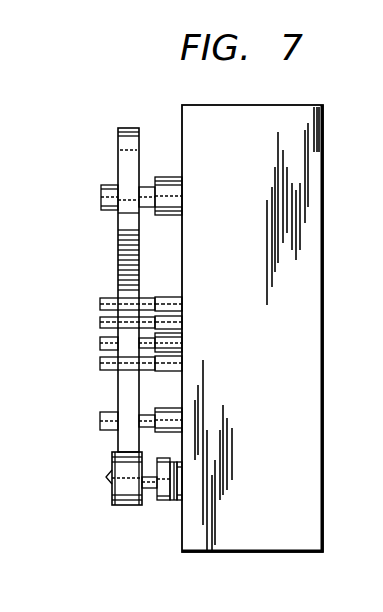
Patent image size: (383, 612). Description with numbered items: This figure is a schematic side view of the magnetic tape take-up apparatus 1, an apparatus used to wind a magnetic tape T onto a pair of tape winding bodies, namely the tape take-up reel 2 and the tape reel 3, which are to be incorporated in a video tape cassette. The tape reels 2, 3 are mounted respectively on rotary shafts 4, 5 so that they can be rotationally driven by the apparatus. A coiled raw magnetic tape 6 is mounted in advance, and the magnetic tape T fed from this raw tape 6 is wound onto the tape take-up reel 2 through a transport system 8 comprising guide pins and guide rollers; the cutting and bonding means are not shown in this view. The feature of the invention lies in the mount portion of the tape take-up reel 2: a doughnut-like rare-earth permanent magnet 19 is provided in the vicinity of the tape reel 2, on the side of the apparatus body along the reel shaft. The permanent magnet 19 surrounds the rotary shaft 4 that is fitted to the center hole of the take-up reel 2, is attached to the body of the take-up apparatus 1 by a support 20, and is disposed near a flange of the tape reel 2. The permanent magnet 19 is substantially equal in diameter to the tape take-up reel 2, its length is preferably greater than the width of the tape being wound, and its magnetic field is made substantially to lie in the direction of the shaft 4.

The take-up apparatus 1 is at (324, 178).
The tape take-up reel 2 is at (81, 484).
The tape reel 3 is at (112, 500).
The rotary shaft 4 is at (137, 511).
The rotary shaft 5 is at (148, 490).
The coiled raw magnetic tape 6 is at (118, 143).
The transport system 8 is at (86, 322).
The rare-earth permanent magnet 19 is at (168, 500).
The support 20 is at (179, 500).
The magnetic tape T is at (118, 255).